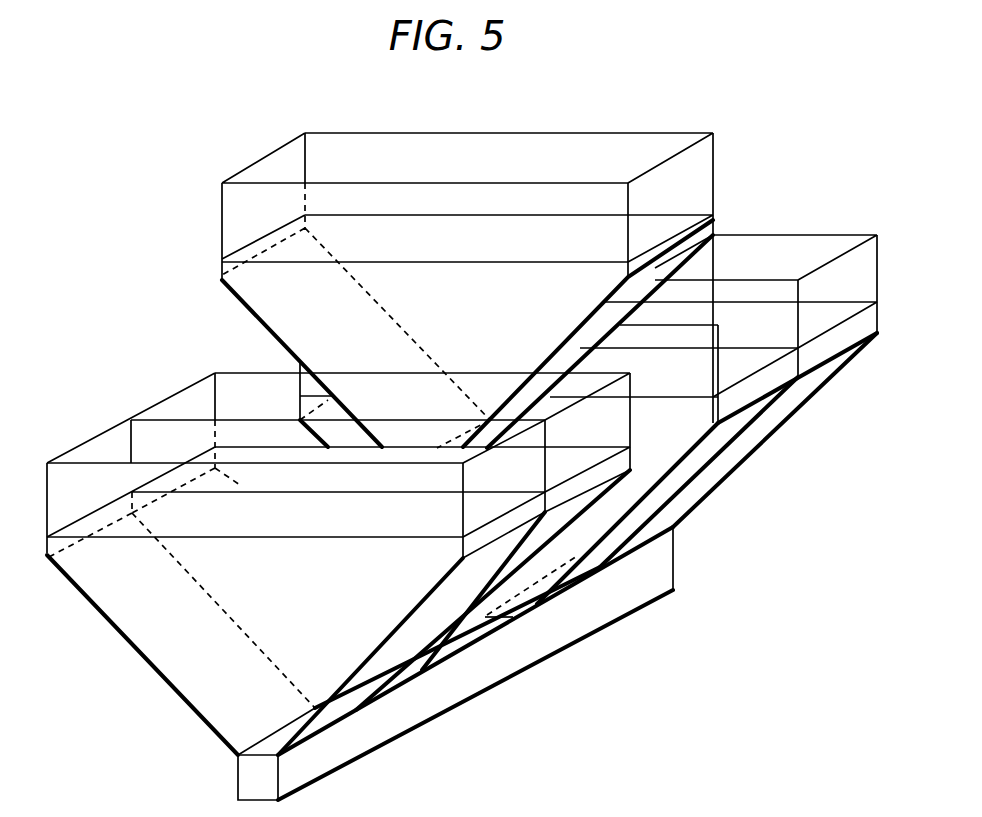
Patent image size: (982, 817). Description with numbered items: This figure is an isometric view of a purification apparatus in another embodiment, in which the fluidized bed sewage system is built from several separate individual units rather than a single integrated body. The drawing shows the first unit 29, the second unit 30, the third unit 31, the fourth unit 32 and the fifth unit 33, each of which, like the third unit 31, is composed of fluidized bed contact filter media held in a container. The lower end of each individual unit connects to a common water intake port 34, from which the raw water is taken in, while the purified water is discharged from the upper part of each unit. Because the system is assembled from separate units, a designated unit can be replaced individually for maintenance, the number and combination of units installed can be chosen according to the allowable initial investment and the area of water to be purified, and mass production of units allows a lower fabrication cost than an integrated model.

The first unit 29 is at (87, 442).
The second unit 30 is at (172, 396).
The third unit 31 is at (281, 145).
The fourth unit 32 is at (758, 302).
The fifth unit 33 is at (833, 258).
The common water intake port 34 is at (238, 779).